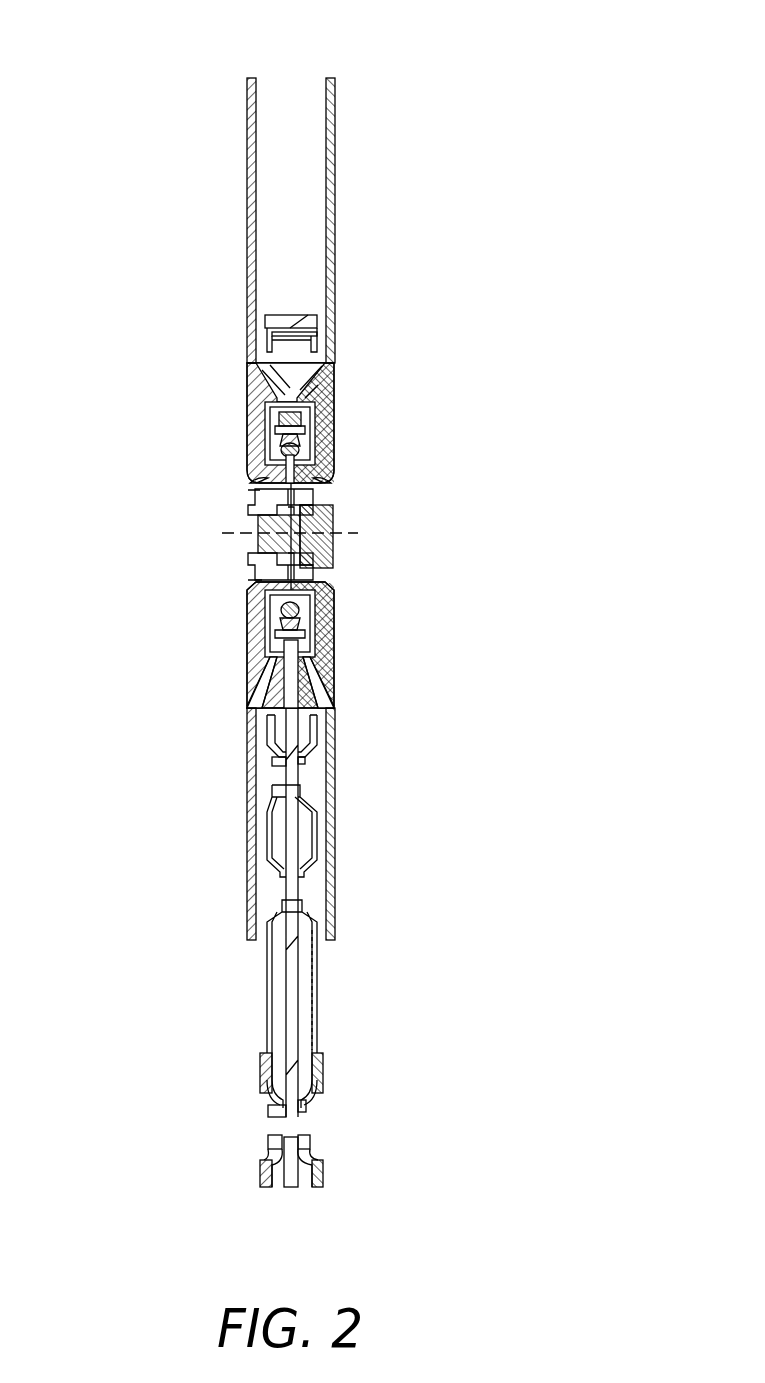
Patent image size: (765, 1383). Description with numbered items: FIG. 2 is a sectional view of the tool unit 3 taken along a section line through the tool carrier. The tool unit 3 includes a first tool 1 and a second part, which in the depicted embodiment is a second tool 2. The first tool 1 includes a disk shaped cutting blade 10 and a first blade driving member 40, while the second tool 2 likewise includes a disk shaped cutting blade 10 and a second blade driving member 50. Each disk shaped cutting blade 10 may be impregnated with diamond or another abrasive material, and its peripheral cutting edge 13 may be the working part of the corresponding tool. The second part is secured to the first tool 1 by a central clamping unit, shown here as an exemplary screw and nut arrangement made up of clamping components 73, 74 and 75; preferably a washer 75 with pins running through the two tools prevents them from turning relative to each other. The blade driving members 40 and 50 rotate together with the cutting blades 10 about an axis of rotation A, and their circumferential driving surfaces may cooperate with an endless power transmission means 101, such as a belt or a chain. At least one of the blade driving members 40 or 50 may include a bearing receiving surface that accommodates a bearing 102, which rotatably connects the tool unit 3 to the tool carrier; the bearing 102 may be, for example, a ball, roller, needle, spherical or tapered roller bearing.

The first tool 1 is at (116, 366).
The second tool 2 is at (492, 351).
The tool unit 3 is at (298, 66).
The disk shaped cutting blade 10 is at (248, 188).
The peripheral cutting edge 13 is at (251, 942).
The first blade driving member 40 is at (213, 437).
The second blade driving member 50 is at (378, 411).
The clamping component 73 is at (333, 560).
The clamping component 74 is at (258, 503).
The washer 75 is at (320, 577).
The endless power transmission means 101 is at (335, 357).
The bearing 102 is at (335, 476).
The axis of rotation A is at (357, 532).